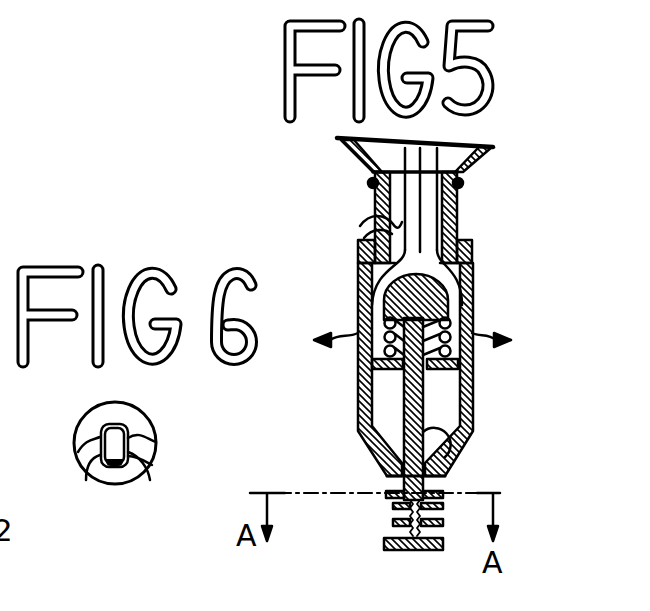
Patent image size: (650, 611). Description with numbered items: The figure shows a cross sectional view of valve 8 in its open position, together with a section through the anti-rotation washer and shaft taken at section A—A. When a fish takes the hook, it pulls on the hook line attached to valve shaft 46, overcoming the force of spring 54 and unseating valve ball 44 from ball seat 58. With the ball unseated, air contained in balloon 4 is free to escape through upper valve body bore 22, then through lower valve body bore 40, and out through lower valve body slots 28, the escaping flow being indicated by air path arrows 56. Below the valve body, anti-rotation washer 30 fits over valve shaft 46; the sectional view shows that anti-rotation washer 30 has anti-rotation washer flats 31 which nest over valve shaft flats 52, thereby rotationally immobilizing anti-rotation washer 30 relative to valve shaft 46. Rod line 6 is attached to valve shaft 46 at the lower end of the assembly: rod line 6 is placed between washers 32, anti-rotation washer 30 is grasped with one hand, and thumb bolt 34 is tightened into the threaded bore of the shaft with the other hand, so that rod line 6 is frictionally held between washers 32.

In FIG. 5, the valve 8 is at (260, 142).
In FIG. 5, the balloon 4 is at (352, 150).
In FIG. 5, the upper valve body bore 22 is at (397, 188).
In FIG. 5, the air path arrows 56 is at (368, 228).
In FIG. 5, the ball seat 58 is at (457, 250).
In FIG. 5, the lower valve body bore 40 is at (450, 230).
In FIG. 5, the valve ball 44 is at (395, 293).
In FIG. 5, the lower valve body slots 28 is at (358, 335).
In FIG. 5, the spring 54 is at (358, 355).
In FIG. 5, the valve shaft 46 is at (446, 438).
In FIG. 6, the valve shaft 46 is at (156, 442).
In FIG. 5, the washers 32 is at (404, 512).
In FIG. 5, the thumb bolt 34 is at (430, 550).
In FIG. 5, the rod line 6 is at (487, 514).
In FIG. 6, the anti-rotation washer 30 is at (122, 414).
In FIG. 6, the valve shaft flats 52 is at (78, 452).
In FIG. 6, the anti-rotation washer flats 31 is at (86, 480).